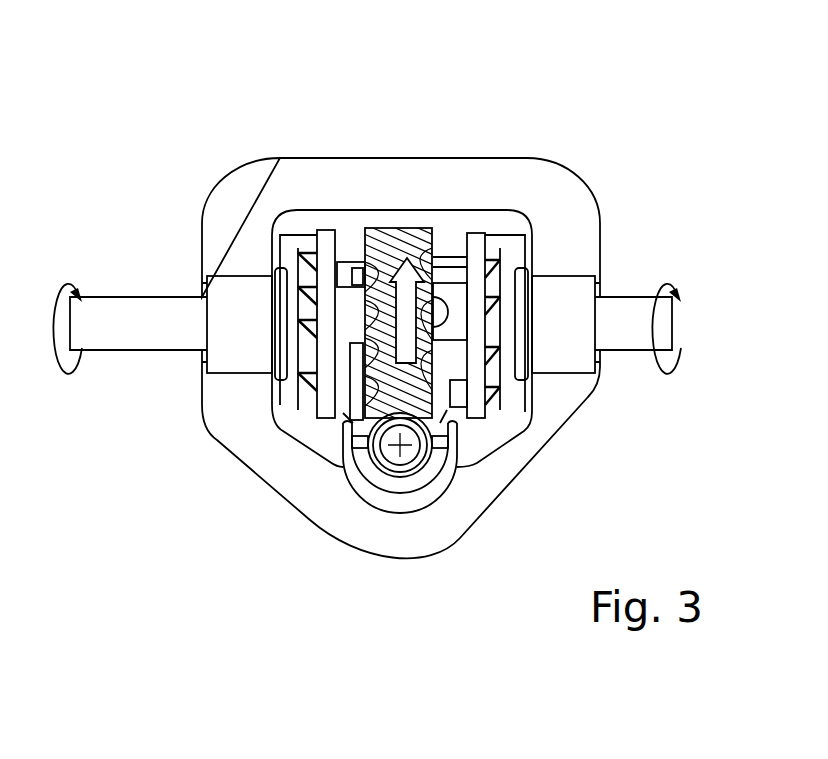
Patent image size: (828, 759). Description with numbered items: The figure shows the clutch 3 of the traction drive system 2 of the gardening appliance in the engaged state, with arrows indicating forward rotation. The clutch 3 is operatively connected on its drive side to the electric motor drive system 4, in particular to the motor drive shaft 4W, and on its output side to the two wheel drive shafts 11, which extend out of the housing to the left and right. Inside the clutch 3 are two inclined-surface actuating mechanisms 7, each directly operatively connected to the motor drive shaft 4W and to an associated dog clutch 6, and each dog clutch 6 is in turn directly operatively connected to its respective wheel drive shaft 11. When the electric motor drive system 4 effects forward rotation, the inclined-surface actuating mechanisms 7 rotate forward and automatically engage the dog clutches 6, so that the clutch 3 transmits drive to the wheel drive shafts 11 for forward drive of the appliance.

The traction drive system 2 is at (118, 128).
The clutch 3 is at (424, 118).
The electric motor drive system 4 is at (351, 407).
The motor drive shaft 4W is at (400, 447).
The dog clutch 6 is at (497, 290).
The inclined-surface actuating mechanism 7 is at (461, 300).
The wheel drive shaft 11 is at (120, 335).